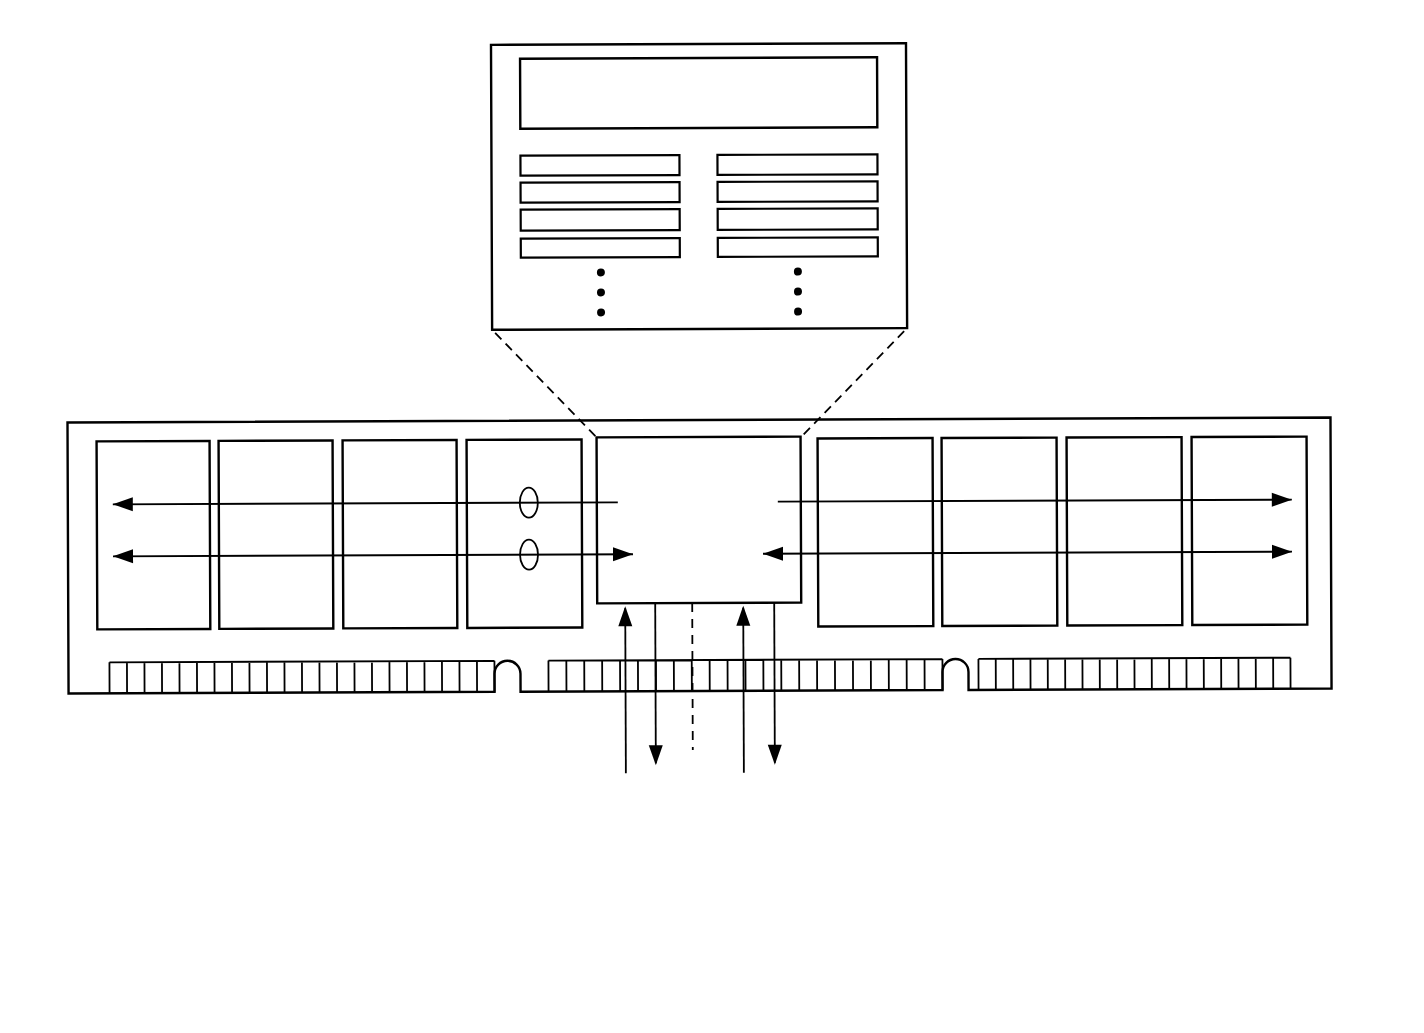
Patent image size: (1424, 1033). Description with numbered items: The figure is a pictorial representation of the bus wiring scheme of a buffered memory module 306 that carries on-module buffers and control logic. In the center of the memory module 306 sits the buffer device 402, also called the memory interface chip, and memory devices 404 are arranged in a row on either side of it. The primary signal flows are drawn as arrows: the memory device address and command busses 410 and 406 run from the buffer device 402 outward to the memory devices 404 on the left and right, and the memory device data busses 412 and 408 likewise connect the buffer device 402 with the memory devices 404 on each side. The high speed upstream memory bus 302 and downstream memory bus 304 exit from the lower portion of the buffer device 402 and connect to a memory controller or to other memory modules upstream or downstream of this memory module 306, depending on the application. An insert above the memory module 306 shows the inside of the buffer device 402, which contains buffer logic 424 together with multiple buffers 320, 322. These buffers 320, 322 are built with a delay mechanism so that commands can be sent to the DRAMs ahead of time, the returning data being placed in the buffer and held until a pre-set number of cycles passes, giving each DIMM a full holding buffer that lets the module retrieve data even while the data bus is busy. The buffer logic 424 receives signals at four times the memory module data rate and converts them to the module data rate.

The upstream memory bus 302 is at (655, 770).
The downstream memory bus 304 is at (625, 773).
The memory module 306 is at (783, 419).
The buffers 320 is at (513, 150).
The buffers 322 is at (885, 150).
The buffer device 402 is at (777, 593).
The SDRAM chip 404 is at (702, 533).
The memory device address and command bus 406 is at (1188, 502).
The memory device data bus 408 is at (1247, 554).
The memory device address and command bus 410 is at (590, 502).
The memory device data bus 412 is at (189, 555).
The buffer logic 424 is at (860, 116).